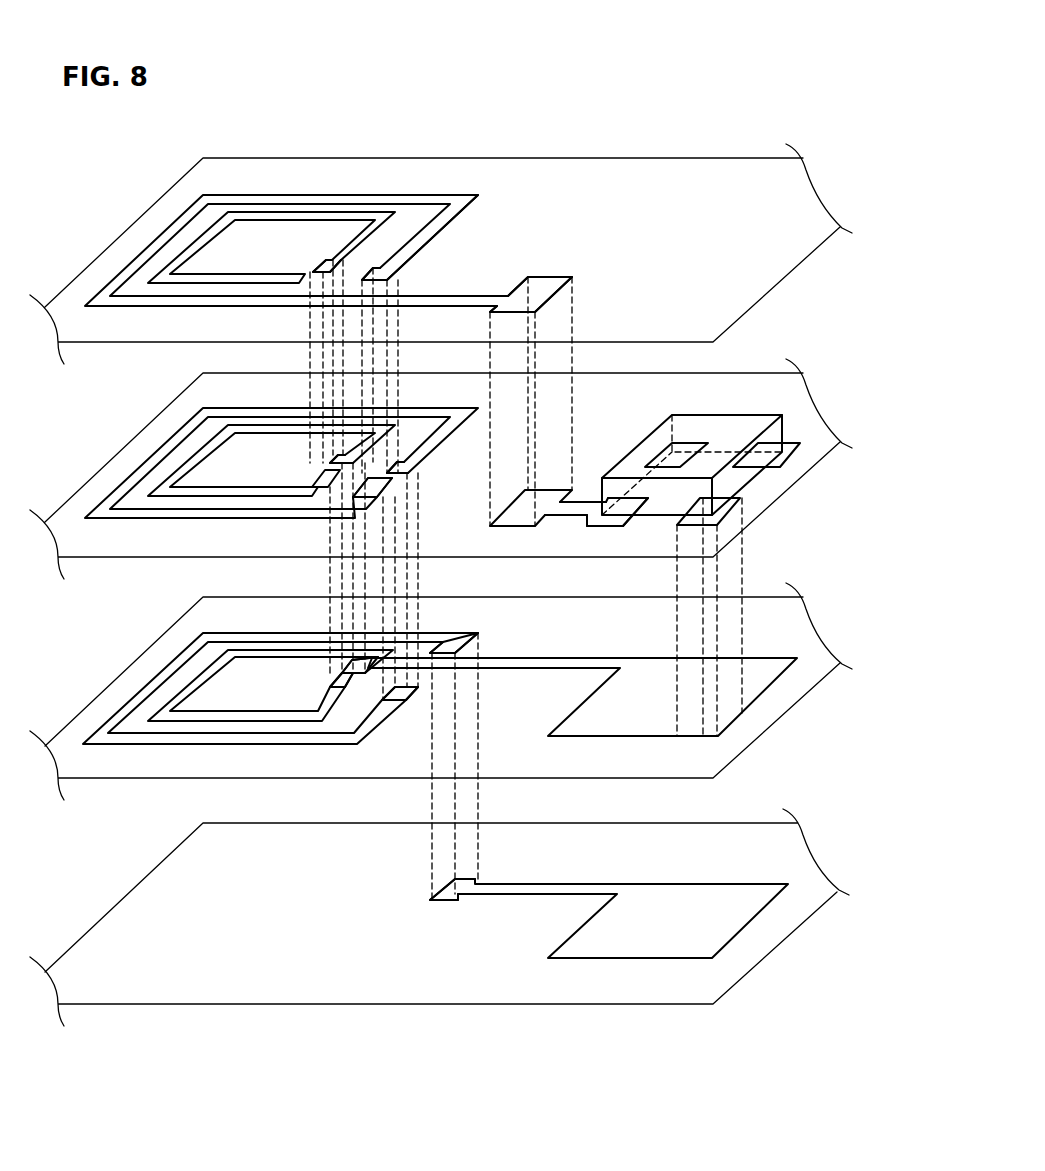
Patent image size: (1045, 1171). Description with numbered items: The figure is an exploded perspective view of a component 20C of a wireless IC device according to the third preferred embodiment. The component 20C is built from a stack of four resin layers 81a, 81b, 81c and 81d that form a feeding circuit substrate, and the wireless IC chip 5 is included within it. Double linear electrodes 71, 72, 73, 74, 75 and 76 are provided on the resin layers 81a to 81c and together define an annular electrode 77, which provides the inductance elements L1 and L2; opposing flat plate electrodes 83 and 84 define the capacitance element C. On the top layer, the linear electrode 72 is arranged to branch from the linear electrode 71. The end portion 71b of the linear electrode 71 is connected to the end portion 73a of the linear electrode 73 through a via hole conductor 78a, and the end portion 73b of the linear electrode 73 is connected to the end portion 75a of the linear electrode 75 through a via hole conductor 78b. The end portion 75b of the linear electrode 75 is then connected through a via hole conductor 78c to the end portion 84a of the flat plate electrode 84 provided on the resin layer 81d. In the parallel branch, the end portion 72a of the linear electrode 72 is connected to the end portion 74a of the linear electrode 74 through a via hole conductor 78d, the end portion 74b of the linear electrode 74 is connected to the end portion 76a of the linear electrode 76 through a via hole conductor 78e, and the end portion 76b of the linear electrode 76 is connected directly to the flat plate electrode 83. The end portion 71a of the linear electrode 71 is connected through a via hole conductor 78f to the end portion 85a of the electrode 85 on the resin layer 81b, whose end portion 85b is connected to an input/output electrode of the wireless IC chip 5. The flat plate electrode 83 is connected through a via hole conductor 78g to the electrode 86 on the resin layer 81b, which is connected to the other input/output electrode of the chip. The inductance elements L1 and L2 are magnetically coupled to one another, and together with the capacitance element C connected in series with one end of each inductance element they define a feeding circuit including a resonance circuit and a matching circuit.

The component of a wireless IC device 20C is at (652, 83).
The wireless IC chip 5 is at (648, 440).
The linear electrode 71 is at (344, 194).
The end portion of linear electrode 71 71a is at (548, 278).
The end portion of linear electrode 71 71b is at (396, 273).
The linear electrode 72 is at (246, 216).
The end portion of linear electrode 72 72a is at (321, 263).
The linear electrode 73 is at (422, 409).
The end portion of linear electrode 73 73a is at (378, 489).
The end portion of linear electrode 73 73b is at (416, 468).
The linear electrode 74 is at (190, 460).
The end portion of linear electrode 74 74a is at (321, 478).
The end portion of linear electrode 74 74b is at (337, 455).
The linear electrode 75 is at (267, 617).
The end portion of linear electrode 75 75a is at (388, 697).
The end portion of linear electrode 75 75b is at (466, 634).
The linear electrode 76 is at (208, 677).
The end portion of linear electrode 76 76a is at (334, 681).
The end portion of linear electrode 76 76b is at (357, 660).
The annular electrode 77 is at (446, 190).
The via hole conductor 78a is at (399, 355).
The via hole conductor 78b is at (419, 578).
The via hole conductor 78c is at (481, 760).
The via hole conductor 78d is at (309, 325).
The via hole conductor 78e is at (329, 577).
The via hole conductor 78f is at (573, 322).
The via hole conductor 78g is at (676, 578).
The resin layer 81a is at (703, 158).
The resin layer 81b is at (760, 373).
The resin layer 81c is at (762, 597).
The resin layer 81d is at (758, 823).
The flat plate electrode 83 is at (590, 700).
The flat plate electrode 84 is at (585, 925).
The end portion of flat plate electrode 84 84a is at (450, 903).
The electrode 85 is at (560, 515).
The end portion of electrode 85 85a is at (513, 524).
The end portion of electrode 85 85b is at (613, 523).
The electrode 86 is at (758, 502).
The inductance element L1 is at (237, 469).
The inductance element L2 is at (230, 396).
The capacitance element C is at (649, 761).